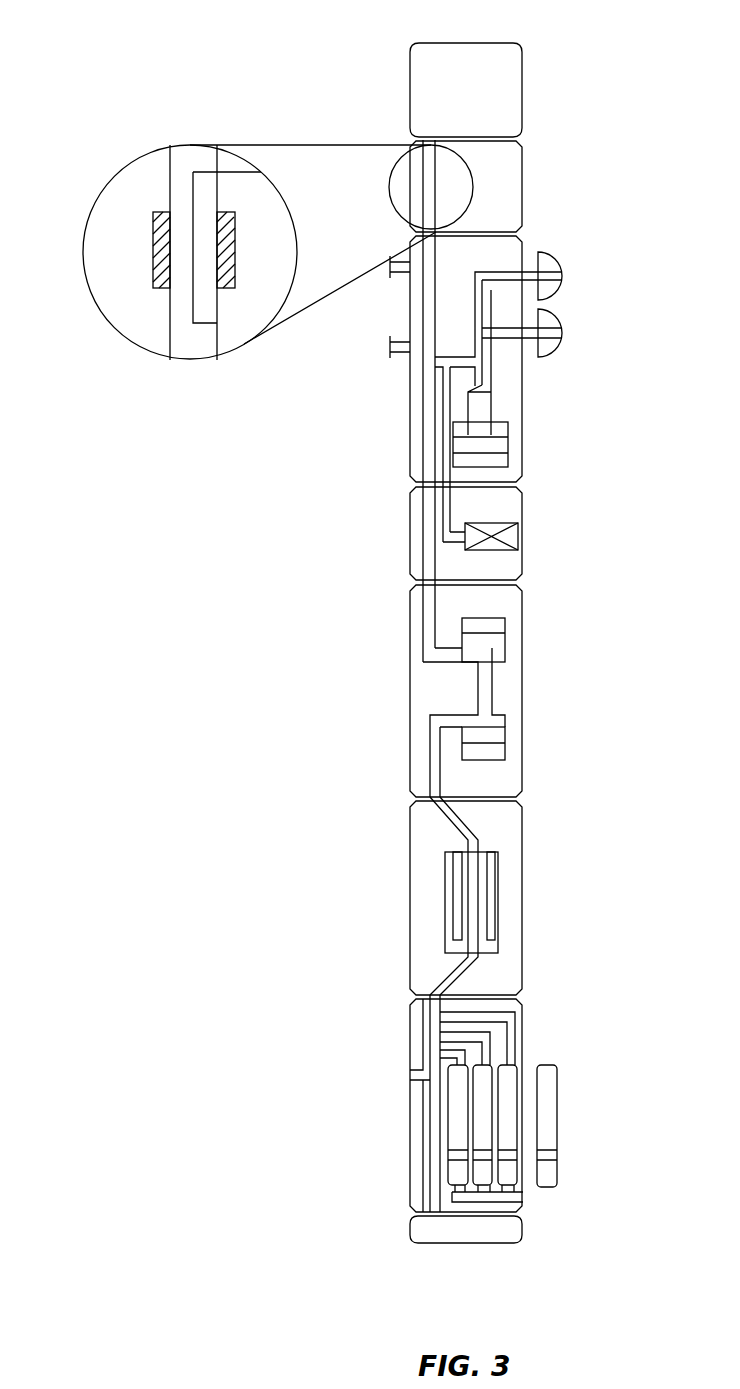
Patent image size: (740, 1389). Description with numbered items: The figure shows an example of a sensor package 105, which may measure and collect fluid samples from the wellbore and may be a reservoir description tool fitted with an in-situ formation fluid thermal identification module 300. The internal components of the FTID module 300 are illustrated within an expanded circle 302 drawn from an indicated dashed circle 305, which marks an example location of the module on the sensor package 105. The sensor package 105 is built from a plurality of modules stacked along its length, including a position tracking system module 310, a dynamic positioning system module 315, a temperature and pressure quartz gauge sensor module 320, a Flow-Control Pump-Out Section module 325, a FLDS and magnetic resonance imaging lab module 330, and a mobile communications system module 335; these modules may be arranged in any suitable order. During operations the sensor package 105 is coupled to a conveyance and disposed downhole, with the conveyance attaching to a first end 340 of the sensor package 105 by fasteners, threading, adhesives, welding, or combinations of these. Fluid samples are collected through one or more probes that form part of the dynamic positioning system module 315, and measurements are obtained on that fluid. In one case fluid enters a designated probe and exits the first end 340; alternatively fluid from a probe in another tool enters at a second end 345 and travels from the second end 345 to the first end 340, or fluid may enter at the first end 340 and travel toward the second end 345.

The sensor package 105 is at (610, 598).
The formation fluid thermal identification module 300 is at (523, 188).
The expanded circle 302 is at (115, 332).
The dashed circle 305 is at (393, 204).
The position tracking system module 310 is at (466, 90).
The dynamic positioning system module 315 is at (565, 237).
The temperature and pressure quartz gauge sensor module 320 is at (523, 508).
The Flow-Control Pump-Out Section module 325 is at (523, 690).
The FLDS and magnetic resonance imaging lab module 330 is at (523, 903).
The mobile communications system module 335 is at (558, 1113).
The first end 340 is at (434, 44).
The second end 345 is at (411, 1222).